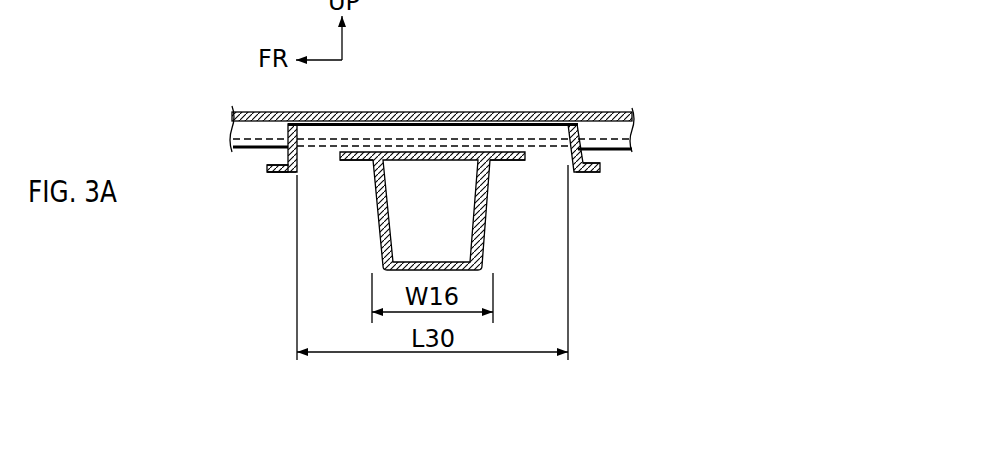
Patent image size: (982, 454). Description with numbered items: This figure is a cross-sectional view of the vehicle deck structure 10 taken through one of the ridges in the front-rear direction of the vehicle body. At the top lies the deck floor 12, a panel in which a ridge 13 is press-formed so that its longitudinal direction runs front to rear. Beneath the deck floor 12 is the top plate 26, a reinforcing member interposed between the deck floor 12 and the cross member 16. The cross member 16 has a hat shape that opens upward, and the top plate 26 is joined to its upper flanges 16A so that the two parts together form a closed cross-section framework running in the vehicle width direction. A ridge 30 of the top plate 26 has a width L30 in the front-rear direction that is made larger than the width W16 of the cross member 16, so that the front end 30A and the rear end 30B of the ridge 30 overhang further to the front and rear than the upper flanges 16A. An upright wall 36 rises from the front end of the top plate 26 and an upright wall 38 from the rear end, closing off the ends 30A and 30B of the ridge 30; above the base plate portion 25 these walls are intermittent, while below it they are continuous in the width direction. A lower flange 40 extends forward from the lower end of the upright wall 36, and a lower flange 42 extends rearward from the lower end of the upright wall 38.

The vehicle deck structure 10 is at (699, 107).
The deck floor 12 is at (610, 106).
The ridge 13 is at (588, 128).
The base plate portion 25 is at (402, 143).
The ridge 30 is at (464, 112).
The front end of ridge 30A is at (292, 121).
The rear end of ridge 30B is at (574, 122).
The upright wall 36 is at (270, 160).
The upright wall 38 is at (583, 155).
The lower flange 40 is at (268, 173).
The lower flange 42 is at (590, 172).
The cross member 16 is at (477, 278).
The upper flange 16A is at (360, 163).
The top plate 26 is at (280, 180).